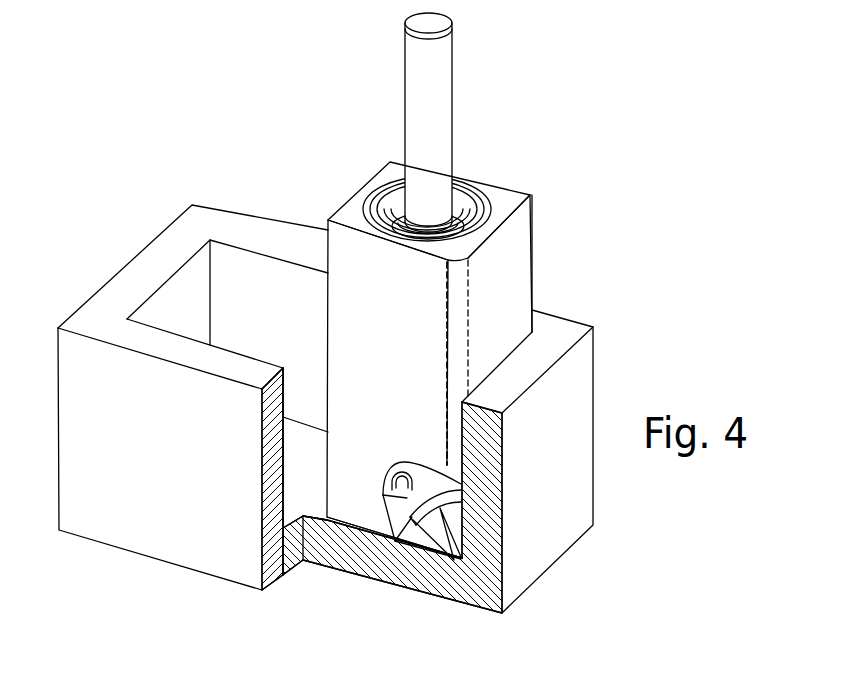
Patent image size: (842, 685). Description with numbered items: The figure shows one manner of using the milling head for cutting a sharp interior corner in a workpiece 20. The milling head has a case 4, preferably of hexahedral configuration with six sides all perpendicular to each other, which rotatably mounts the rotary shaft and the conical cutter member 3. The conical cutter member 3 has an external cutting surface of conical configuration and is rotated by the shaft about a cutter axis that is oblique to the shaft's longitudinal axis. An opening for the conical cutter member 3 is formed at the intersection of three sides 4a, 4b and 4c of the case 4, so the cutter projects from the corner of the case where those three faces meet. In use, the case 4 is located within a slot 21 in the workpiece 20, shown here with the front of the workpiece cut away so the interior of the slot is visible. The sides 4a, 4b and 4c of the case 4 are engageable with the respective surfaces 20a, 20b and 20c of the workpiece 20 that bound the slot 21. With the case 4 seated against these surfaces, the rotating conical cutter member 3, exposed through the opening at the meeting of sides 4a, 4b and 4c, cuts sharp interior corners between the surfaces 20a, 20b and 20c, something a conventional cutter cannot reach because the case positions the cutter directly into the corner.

The conical cutter member 3 is at (458, 561).
The case 4 is at (539, 240).
The side of case 4a is at (397, 313).
The side of case 4b is at (513, 306).
The side of case 4c is at (382, 525).
The workpiece 20 is at (168, 243).
The surface of workpiece 20a is at (283, 388).
The surface of workpiece 20b is at (447, 423).
The surface of workpiece 20c is at (347, 523).
The slot 21 is at (262, 282).